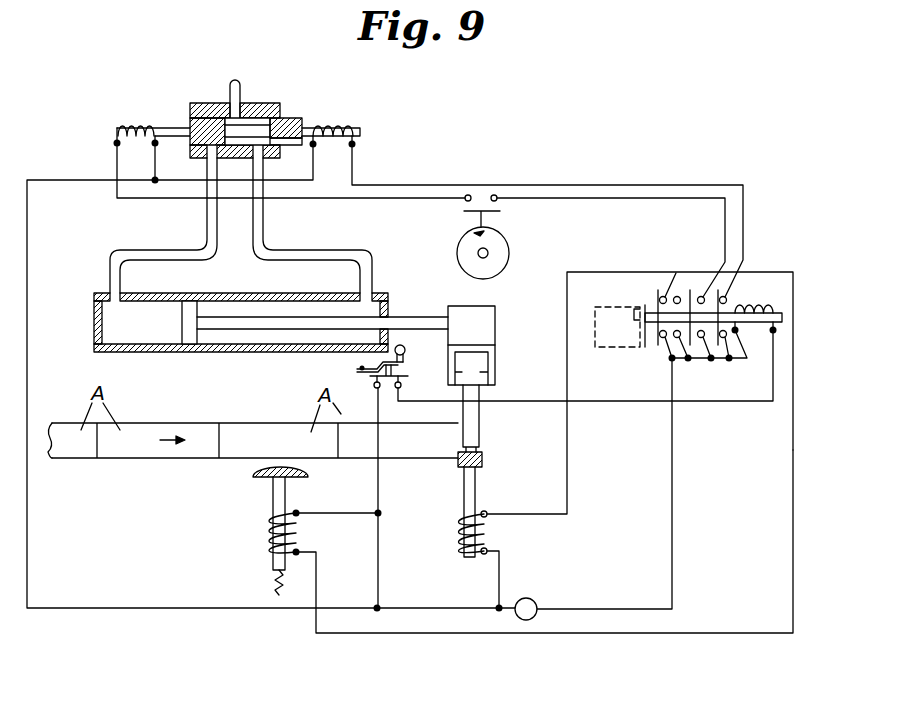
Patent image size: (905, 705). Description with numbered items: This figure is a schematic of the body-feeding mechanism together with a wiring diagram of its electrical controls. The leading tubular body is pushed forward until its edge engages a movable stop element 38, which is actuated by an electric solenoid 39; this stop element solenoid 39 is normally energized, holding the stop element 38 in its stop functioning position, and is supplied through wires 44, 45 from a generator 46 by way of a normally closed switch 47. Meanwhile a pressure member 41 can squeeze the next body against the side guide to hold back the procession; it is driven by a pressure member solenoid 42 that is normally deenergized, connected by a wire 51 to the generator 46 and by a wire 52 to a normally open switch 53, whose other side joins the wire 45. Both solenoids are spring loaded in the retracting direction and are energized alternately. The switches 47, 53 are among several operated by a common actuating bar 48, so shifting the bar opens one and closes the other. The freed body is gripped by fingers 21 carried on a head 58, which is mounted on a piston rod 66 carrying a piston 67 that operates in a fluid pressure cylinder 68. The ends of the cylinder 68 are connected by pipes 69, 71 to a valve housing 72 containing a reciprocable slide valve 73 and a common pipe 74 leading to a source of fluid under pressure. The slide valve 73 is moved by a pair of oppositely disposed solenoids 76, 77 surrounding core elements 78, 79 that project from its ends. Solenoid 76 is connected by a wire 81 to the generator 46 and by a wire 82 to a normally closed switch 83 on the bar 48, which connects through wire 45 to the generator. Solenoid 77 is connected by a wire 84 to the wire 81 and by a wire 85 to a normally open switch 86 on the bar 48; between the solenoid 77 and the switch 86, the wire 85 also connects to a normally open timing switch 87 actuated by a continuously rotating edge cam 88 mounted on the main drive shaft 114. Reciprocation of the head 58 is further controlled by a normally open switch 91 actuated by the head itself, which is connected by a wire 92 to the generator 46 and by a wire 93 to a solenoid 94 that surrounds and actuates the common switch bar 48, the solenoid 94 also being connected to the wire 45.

The fingers 21 is at (472, 427).
The stop element 38 is at (483, 461).
The stop element solenoid 39 is at (462, 538).
The pressure member 41 is at (257, 481).
The pressure member solenoid 42 is at (268, 531).
The wire 44 is at (540, 514).
The wire 45 is at (580, 608).
The generator 46 is at (532, 597).
The normally closed switch 47 is at (657, 308).
The common actuating bar 48 is at (686, 351).
The wire 51 is at (330, 513).
The wire 52 is at (440, 635).
The normally open switch 53 is at (678, 296).
The head 58 is at (600, 326).
The piston rod 66 is at (408, 320).
The piston 67 is at (190, 314).
The fluid pressure cylinder 68 is at (268, 296).
The pipe 69 is at (206, 216).
The pipe 71 is at (264, 216).
The valve housing 72 is at (262, 117).
The slide valve 73 is at (293, 120).
The common pipe 74 is at (238, 84).
The solenoid 76 is at (334, 124).
The solenoid 77 is at (133, 124).
The core element 78 is at (362, 129).
The core element 79 is at (168, 126).
The wire 81 is at (27, 532).
The wire 82 is at (540, 185).
The normally closed switch 83 is at (728, 297).
The wire 84 is at (155, 160).
The wire 85 is at (117, 165).
The normally open switch 86 is at (702, 296).
The timing switch 87 is at (470, 211).
The edge cam 88 is at (500, 247).
The switch 91 is at (403, 364).
The wire 92 is at (374, 390).
The wire 93 is at (520, 400).
The solenoid 94 is at (759, 312).
The main drive shaft 114 is at (478, 254).